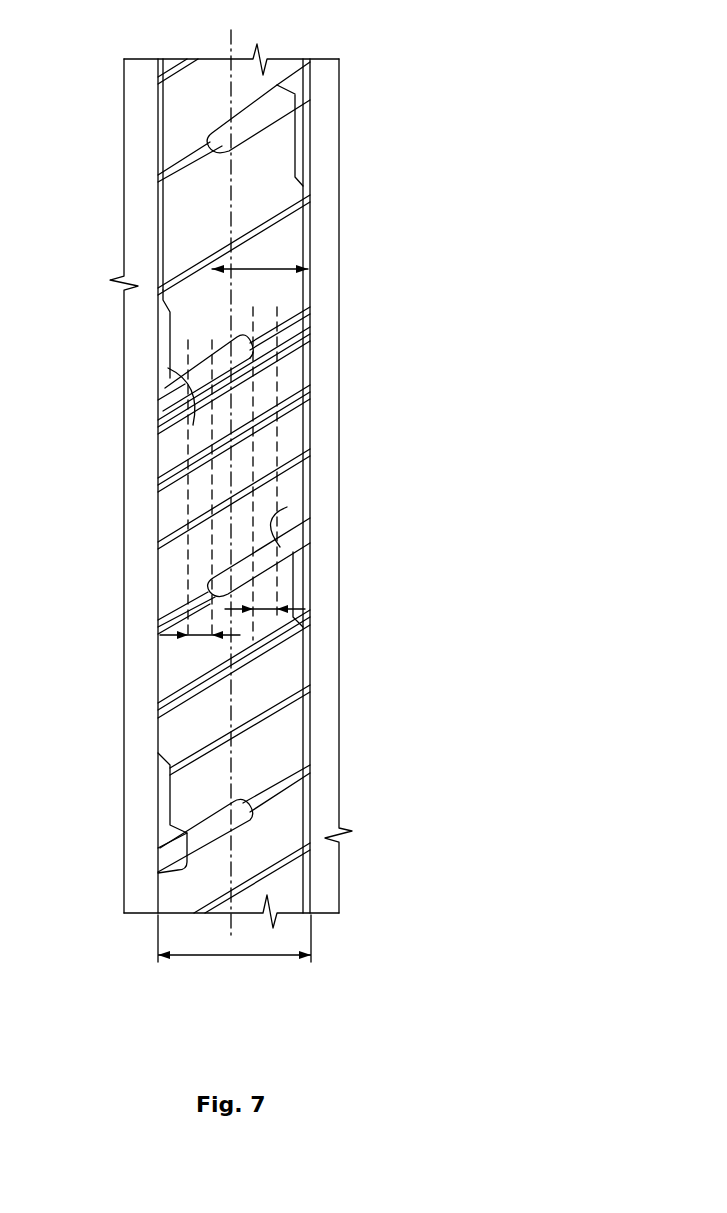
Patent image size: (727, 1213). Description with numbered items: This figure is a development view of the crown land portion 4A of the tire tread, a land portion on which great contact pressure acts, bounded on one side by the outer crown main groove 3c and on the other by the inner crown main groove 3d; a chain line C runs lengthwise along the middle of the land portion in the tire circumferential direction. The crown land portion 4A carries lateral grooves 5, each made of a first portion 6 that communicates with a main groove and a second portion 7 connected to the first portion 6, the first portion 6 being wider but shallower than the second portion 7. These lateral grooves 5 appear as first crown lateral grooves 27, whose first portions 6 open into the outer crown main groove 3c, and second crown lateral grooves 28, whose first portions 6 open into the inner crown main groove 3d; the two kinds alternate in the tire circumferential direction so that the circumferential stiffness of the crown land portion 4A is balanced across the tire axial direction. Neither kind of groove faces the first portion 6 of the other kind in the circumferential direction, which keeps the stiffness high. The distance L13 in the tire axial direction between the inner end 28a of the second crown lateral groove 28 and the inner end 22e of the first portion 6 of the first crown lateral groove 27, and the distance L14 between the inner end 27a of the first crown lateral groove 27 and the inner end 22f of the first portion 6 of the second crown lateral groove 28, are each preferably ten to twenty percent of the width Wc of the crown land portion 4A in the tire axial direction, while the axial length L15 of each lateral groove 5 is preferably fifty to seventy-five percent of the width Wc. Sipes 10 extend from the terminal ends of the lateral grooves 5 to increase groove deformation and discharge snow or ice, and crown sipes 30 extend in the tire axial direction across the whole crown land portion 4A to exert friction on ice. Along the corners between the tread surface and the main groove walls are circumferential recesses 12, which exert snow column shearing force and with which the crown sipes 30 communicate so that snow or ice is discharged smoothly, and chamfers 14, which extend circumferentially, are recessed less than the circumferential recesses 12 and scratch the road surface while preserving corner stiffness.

The outer crown main groove 3c is at (141, 88).
The inner crown main groove 3d is at (322, 88).
The crown land portion 4A is at (199, 106).
The center axis C is at (231, 473).
The lateral groove 5 is at (148, 374).
The first portion 6 is at (170, 393).
The second portion 7 is at (250, 353).
The first crown lateral groove 27 is at (254, 355).
The inner end 27a is at (280, 337).
The second crown lateral groove 28 is at (265, 558).
The inner end 28a is at (213, 580).
The inner end 22e is at (167, 445).
The inner end 22f is at (268, 510).
The chamfer 14 is at (162, 505).
The sipe 10 is at (162, 607).
The circumferential recess 12 is at (163, 790).
The crown sipe 30 is at (258, 647).
The length of lateral groove L15 is at (257, 268).
The distance L14 is at (200, 637).
The distance L13 is at (302, 635).
The width of crown land portion Wc is at (234, 951).